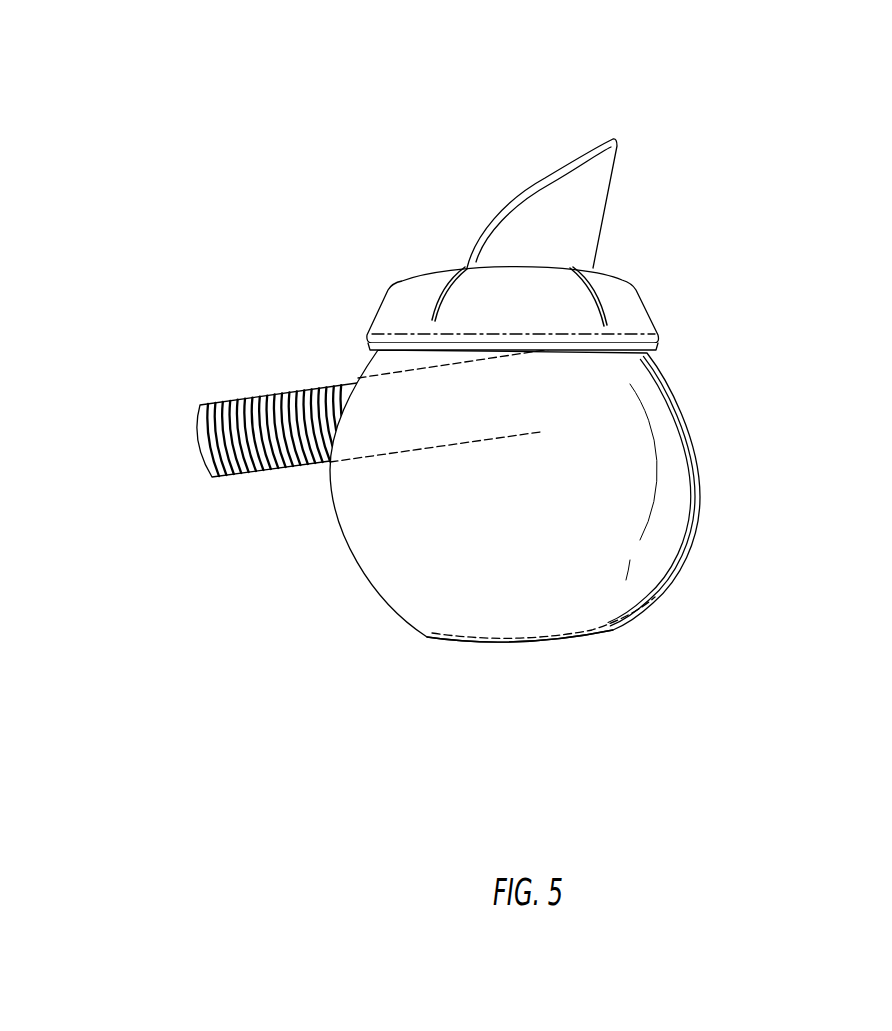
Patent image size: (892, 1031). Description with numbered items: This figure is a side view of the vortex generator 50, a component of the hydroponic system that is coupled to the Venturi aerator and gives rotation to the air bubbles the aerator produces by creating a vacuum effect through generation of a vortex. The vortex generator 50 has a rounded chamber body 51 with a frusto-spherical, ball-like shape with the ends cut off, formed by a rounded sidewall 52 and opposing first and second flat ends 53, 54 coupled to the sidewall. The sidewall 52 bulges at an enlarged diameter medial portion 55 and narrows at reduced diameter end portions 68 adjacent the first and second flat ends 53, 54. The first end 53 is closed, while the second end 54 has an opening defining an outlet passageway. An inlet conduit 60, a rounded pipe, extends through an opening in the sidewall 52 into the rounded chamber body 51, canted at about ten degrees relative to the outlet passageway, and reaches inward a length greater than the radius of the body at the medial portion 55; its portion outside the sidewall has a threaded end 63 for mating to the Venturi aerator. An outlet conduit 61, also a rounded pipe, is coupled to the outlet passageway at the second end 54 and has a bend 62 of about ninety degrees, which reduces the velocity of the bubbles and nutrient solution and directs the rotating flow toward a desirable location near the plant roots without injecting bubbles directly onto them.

The vortex generator 50 is at (470, 573).
The rounded chamber body 51 is at (680, 567).
The sidewall 52 is at (382, 550).
The first flat end 53 is at (427, 637).
The second flat end 54 is at (452, 183).
The enlarged diameter medial portion 55 is at (700, 481).
The inlet conduit 60 is at (358, 372).
The outlet conduit 61 is at (577, 178).
The bend 62 is at (512, 200).
The threaded end 63 is at (222, 441).
The reduced diameter end portions 68 is at (653, 353).